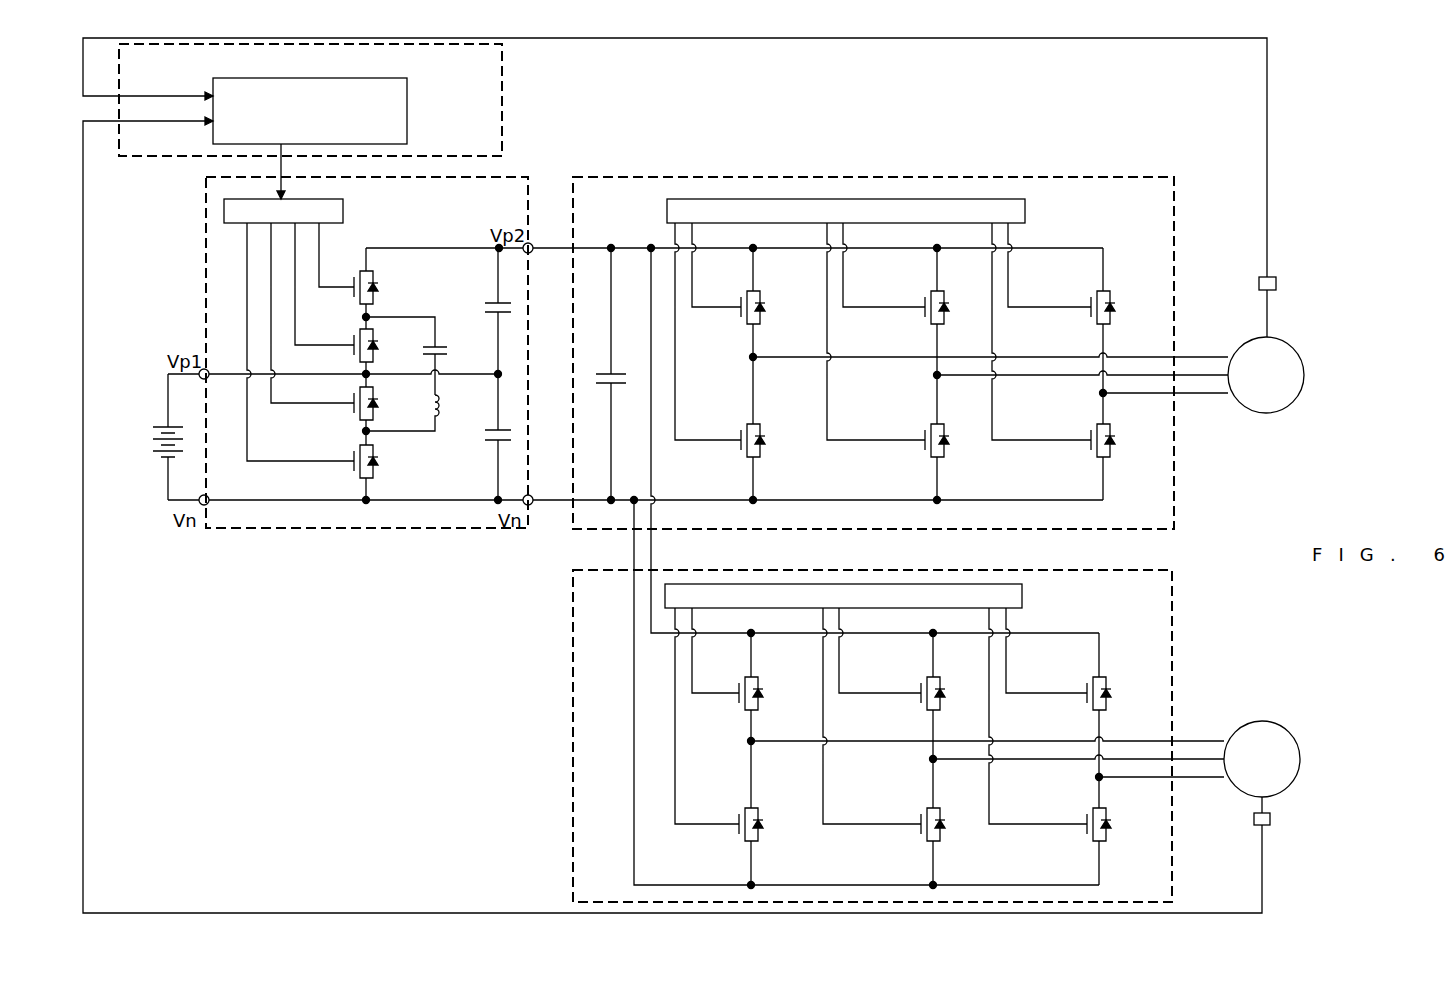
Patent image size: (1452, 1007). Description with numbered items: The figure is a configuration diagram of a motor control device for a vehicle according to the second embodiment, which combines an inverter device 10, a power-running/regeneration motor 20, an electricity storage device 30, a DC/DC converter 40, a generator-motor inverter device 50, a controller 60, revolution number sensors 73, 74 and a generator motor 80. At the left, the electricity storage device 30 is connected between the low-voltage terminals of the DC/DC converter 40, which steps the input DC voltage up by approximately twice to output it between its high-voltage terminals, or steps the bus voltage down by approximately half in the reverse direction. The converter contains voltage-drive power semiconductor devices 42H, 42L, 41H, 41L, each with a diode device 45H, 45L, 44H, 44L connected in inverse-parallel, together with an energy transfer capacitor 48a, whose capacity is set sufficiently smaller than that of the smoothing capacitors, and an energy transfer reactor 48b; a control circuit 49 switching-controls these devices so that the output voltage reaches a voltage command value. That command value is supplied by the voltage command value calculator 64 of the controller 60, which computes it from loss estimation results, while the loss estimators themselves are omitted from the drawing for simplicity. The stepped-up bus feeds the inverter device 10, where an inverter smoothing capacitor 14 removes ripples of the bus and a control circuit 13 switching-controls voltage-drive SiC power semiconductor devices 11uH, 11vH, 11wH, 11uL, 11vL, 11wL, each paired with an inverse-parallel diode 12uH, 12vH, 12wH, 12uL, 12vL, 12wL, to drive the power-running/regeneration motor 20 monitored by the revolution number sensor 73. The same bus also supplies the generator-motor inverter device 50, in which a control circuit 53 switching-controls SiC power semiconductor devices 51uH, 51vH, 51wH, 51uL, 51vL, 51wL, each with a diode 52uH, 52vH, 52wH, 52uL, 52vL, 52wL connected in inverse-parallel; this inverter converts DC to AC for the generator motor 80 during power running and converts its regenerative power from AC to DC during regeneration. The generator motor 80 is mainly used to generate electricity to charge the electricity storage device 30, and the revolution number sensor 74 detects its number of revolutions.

The controller 60 is at (503, 62).
The voltage command value calculator 64 is at (408, 105).
The DC/DC converter 40 is at (511, 177).
The control circuit 49 is at (343, 214).
The electricity storage device 30 is at (147, 432).
The power semiconductor device 42H is at (349, 284).
The diode device 45H is at (379, 287).
The power semiconductor device 42L is at (346, 342).
The diode device 45L is at (384, 352).
The power semiconductor device 41H is at (346, 402).
The diode device 44H is at (384, 410).
The power semiconductor device 41L is at (346, 460).
The diode device 44L is at (384, 468).
The energy transfer capacitor 48a is at (448, 343).
The energy transfer reactor 48b is at (442, 426).
The inverter device 10 is at (1133, 175).
The control circuit 13 is at (1025, 210).
The inverter smoothing capacitor 14 is at (604, 364).
The power semiconductor device 11uH is at (734, 297).
The diode 12uH is at (768, 300).
The power semiconductor device 11vH is at (918, 297).
The diode 12vH is at (952, 300).
The power semiconductor device 11wH is at (1084, 297).
The diode 12wH is at (1118, 300).
The power semiconductor device 11uL is at (734, 430).
The diode 12uL is at (768, 433).
The power semiconductor device 11vL is at (918, 430).
The diode 12vL is at (952, 433).
The power semiconductor device 11wL is at (1084, 430).
The diode 12wL is at (1118, 433).
The power-running/regeneration motor 20 is at (1238, 345).
The revolution number sensor 73 is at (1258, 284).
The generator-motor inverter device 50 is at (1131, 569).
The control circuit 53 is at (1022, 600).
The power semiconductor device 51uH is at (732, 683).
The diode 52uH is at (766, 686).
The power semiconductor device 51vH is at (914, 683).
The diode 52vH is at (948, 686).
The power semiconductor device 51wH is at (1080, 683).
The diode 52wH is at (1114, 686).
The power semiconductor device 51uL is at (732, 814).
The diode 52uL is at (766, 817).
The power semiconductor device 51vL is at (914, 814).
The diode 52vL is at (948, 817).
The power semiconductor device 51wL is at (1080, 814).
The diode 52wL is at (1114, 817).
The generator motor 80 is at (1235, 732).
The revolution number sensor 74 is at (1253, 821).